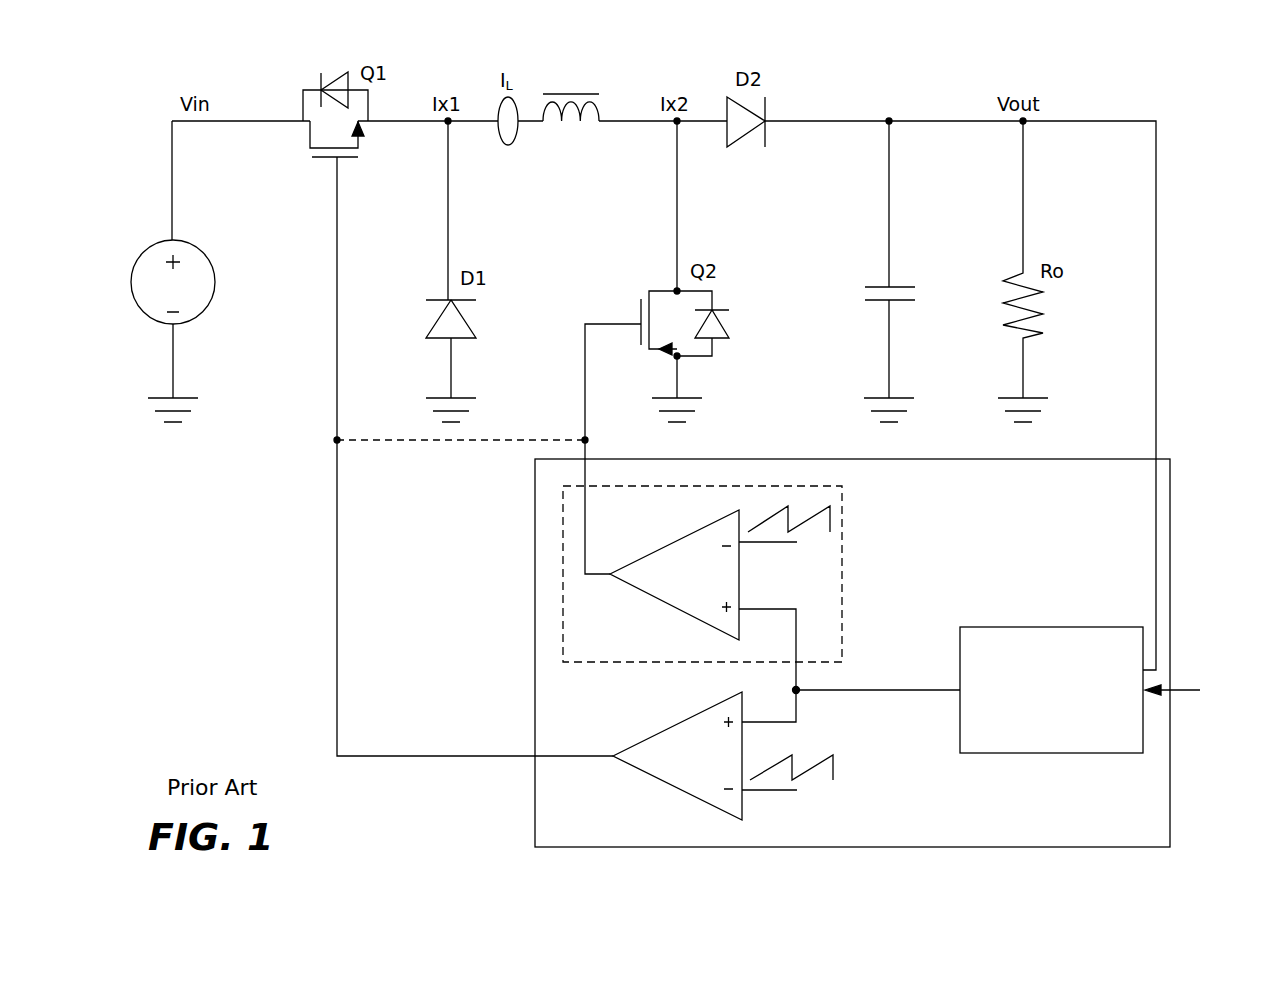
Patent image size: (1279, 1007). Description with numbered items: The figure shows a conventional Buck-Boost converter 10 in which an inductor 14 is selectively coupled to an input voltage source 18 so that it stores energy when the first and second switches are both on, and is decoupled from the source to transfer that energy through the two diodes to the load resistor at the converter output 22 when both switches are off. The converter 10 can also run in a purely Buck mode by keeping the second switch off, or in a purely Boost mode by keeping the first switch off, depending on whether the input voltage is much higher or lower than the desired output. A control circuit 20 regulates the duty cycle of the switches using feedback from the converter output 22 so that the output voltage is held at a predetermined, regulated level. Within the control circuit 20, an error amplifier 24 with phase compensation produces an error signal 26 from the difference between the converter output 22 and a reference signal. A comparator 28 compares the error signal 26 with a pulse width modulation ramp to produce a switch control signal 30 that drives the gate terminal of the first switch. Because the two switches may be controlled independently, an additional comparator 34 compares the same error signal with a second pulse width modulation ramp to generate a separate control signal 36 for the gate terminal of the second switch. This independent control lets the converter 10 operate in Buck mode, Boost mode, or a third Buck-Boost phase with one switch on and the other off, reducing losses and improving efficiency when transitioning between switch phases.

The Buck-Boost converter 10 is at (206, 558).
The inductor 14 is at (571, 126).
The input voltage source 18 is at (192, 243).
The control circuit 20 is at (1135, 511).
The converter output 22 is at (889, 118).
The error amplifier 24 is at (1039, 742).
The error signal Vc 26 is at (868, 688).
The comparator 28 is at (704, 768).
The switch control signal 30 is at (334, 316).
The additional comparator 34 is at (702, 586).
The control signal 36 is at (609, 323).